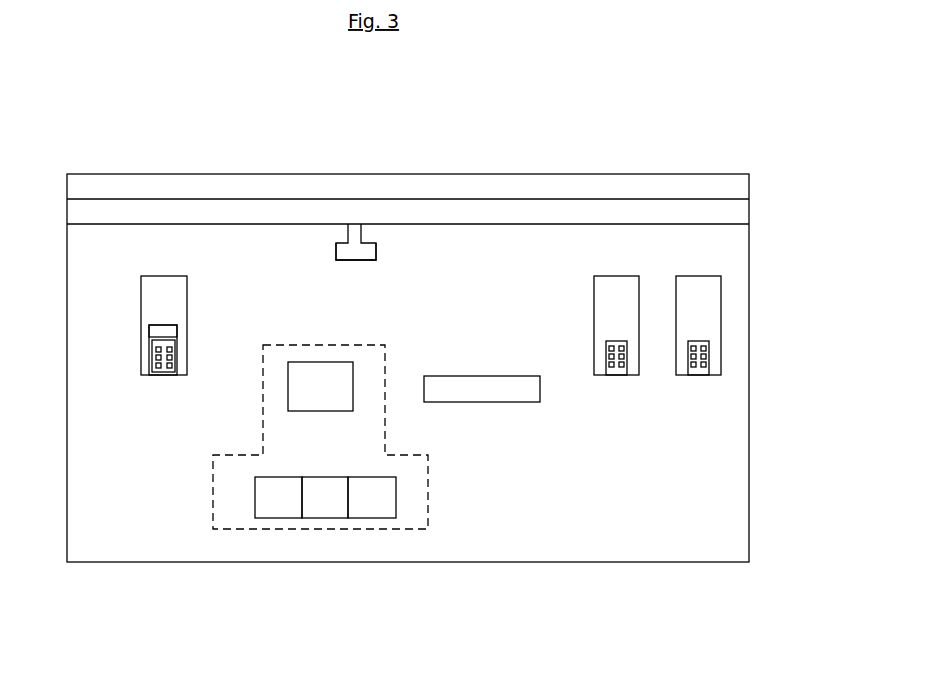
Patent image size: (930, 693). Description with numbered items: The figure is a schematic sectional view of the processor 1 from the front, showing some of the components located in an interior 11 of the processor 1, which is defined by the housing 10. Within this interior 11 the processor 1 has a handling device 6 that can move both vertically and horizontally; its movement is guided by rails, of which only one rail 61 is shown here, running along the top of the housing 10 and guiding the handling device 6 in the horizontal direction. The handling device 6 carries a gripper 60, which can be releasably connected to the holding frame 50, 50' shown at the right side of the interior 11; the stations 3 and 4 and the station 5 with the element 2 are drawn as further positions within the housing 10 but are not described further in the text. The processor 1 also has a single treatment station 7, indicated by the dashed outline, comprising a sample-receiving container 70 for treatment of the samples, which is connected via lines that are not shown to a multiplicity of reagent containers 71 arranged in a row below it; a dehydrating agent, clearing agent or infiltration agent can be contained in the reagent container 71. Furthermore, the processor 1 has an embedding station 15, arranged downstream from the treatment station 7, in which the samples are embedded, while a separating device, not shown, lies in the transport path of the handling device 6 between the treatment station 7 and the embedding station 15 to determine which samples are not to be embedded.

The processor 1 is at (183, 158).
The mobile device 2 is at (135, 343).
The first holder 3 is at (638, 262).
The second holder 4 is at (726, 268).
The holder with mobile device 5 is at (155, 316).
The handling device 6 is at (337, 233).
The treatment station 7 is at (430, 522).
The housing 10 is at (616, 562).
The interior 11 is at (687, 520).
The embedding station 15 is at (504, 393).
The holding frame 50 is at (697, 399).
The holding frame 50' is at (761, 392).
The gripper 60 is at (355, 248).
The rail 61 is at (594, 211).
The sample-receiving container 70 is at (300, 392).
The reagent container 71 is at (287, 508).